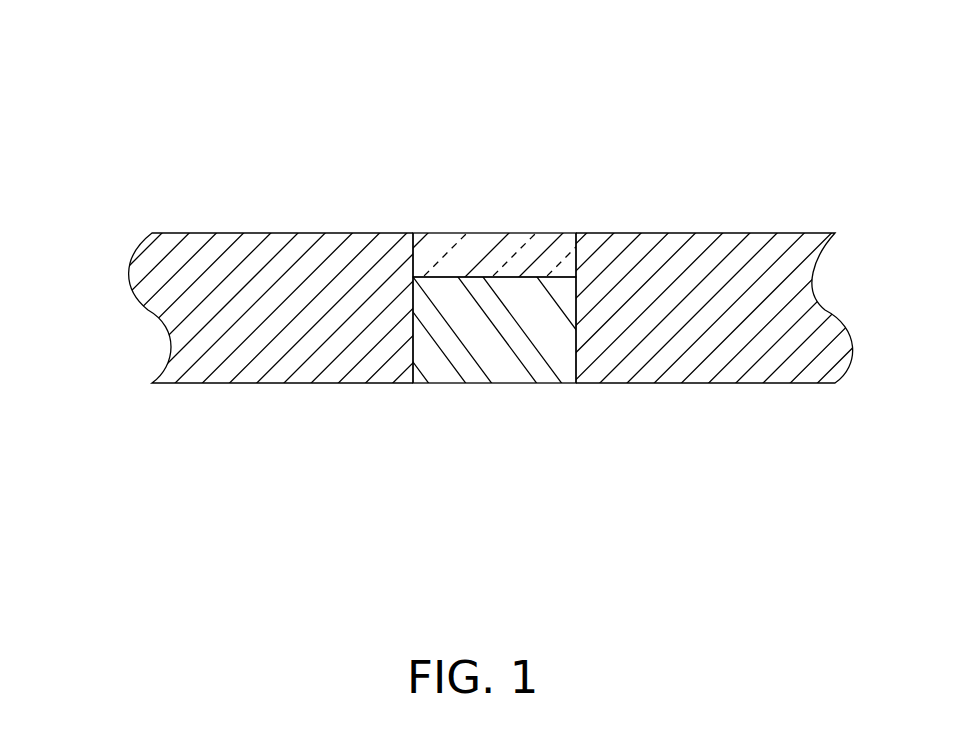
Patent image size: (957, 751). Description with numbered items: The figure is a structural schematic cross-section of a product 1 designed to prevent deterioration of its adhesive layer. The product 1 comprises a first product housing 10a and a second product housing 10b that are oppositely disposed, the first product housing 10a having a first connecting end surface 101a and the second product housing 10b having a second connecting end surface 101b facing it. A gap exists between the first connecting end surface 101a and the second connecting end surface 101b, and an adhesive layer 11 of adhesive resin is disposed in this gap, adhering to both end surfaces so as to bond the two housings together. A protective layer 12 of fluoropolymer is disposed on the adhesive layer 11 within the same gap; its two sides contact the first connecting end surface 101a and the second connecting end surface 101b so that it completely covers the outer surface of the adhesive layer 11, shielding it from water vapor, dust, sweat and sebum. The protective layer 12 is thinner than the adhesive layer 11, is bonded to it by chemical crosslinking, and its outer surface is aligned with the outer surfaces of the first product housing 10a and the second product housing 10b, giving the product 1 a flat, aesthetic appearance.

The product 1 is at (478, 282).
The first product housing 10a is at (287, 380).
The second product housing 10b is at (708, 383).
The adhesive layer 11 is at (507, 370).
The protective layer 12 is at (477, 252).
The first connecting end surface 101a is at (413, 308).
The second connecting end surface 101b is at (583, 343).